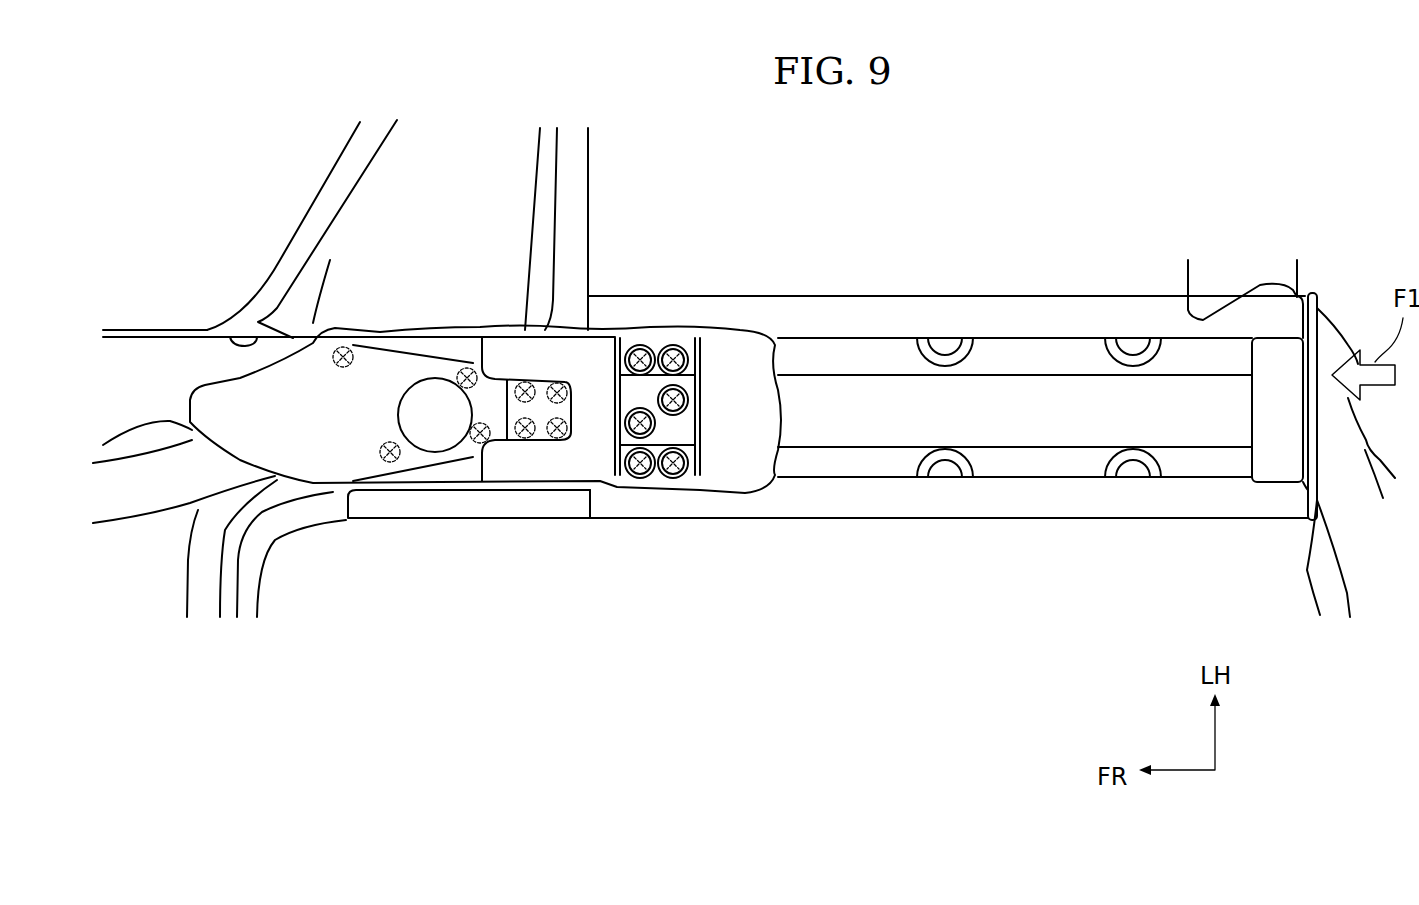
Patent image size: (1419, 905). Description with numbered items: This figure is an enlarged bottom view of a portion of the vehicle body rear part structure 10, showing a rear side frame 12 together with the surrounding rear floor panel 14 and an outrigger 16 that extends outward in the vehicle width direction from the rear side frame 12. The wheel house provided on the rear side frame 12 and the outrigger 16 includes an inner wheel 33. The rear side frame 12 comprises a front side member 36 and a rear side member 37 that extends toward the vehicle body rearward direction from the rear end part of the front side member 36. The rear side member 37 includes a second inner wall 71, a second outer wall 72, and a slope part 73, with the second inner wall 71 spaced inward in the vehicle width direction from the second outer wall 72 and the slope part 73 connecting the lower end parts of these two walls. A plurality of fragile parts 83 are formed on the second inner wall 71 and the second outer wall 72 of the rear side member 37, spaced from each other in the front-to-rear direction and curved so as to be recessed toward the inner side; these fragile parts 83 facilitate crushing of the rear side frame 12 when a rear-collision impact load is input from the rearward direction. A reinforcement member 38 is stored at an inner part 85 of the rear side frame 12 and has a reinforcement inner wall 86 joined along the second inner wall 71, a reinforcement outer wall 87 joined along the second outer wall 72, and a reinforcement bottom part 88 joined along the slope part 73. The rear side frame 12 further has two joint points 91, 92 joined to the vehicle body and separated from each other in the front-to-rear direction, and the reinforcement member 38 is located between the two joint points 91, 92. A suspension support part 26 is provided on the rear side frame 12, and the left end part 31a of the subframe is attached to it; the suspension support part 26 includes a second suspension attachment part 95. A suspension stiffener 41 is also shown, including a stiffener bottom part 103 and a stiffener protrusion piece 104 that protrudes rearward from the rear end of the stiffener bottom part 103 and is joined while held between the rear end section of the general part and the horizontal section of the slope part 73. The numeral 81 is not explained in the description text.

The vehicle body rear part structure 10 is at (520, 233).
The rear side frame 12 is at (878, 290).
The rear floor panel 14 is at (667, 538).
The outrigger 16 is at (390, 173).
The suspension support part 26 is at (291, 560).
The left end part of the subframe 31a is at (140, 477).
The inner wheel 33 is at (210, 300).
The front side member 36 is at (424, 524).
The rear side member 37 is at (852, 510).
The reinforcement member 38 is at (659, 323).
The suspension stiffener 41 is at (360, 436).
The second inner wall 71 is at (1065, 463).
The second outer wall 72 is at (1067, 350).
The slope part 73 is at (900, 423).
The weld portion 81 is at (592, 502).
The fragile part 83 is at (945, 352).
The inner part 85 is at (758, 409).
The reinforcement inner wall 86 is at (687, 340).
The reinforcement outer wall 87 is at (688, 472).
The reinforcement bottom part 88 is at (683, 431).
The joint point 91 is at (610, 308).
The joint point 92 is at (688, 303).
The second suspension attachment part 95 is at (212, 546).
The stiffener bottom part 103 is at (384, 370).
The stiffener protrusion piece 104 is at (544, 440).